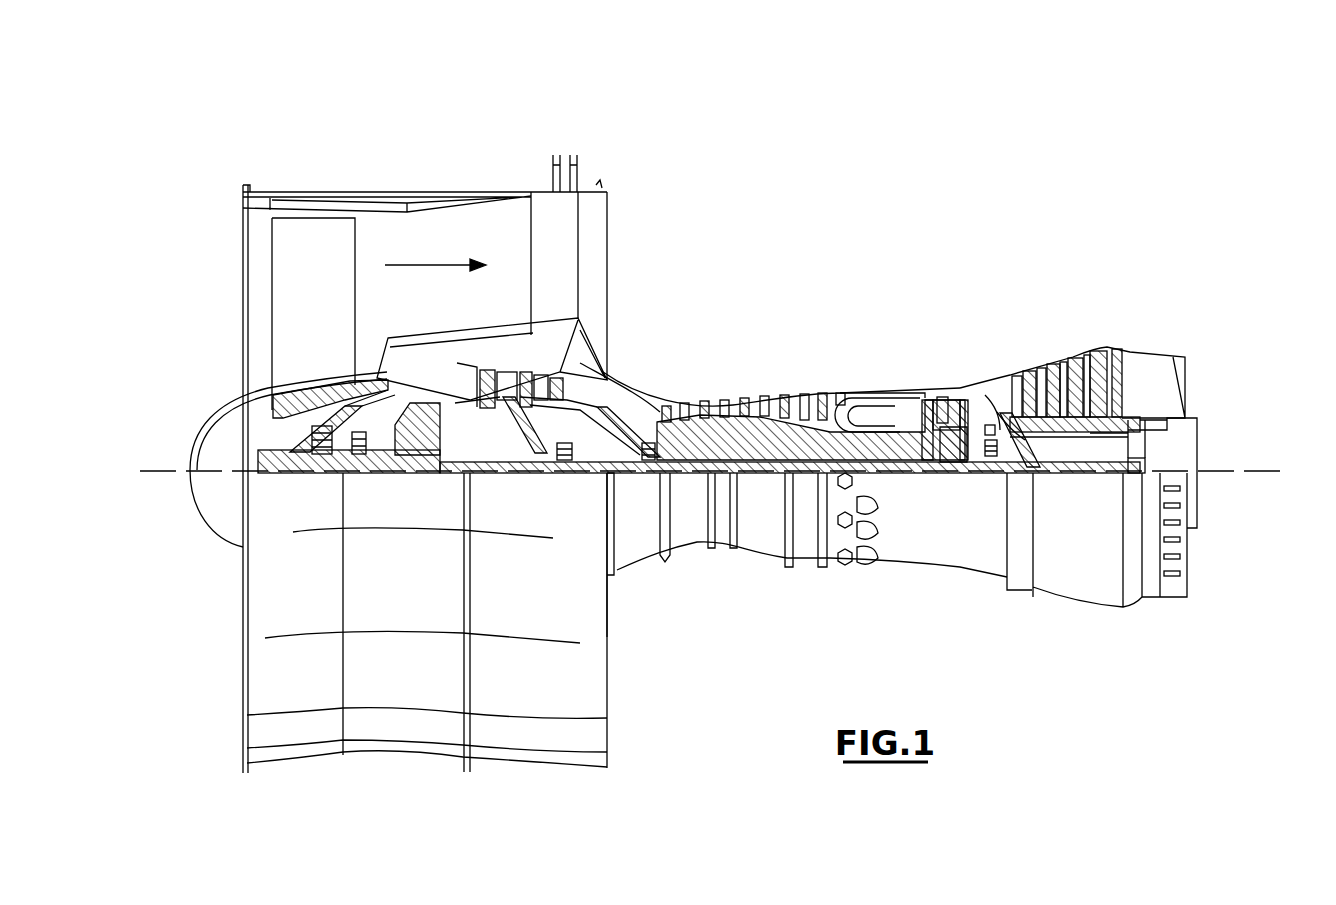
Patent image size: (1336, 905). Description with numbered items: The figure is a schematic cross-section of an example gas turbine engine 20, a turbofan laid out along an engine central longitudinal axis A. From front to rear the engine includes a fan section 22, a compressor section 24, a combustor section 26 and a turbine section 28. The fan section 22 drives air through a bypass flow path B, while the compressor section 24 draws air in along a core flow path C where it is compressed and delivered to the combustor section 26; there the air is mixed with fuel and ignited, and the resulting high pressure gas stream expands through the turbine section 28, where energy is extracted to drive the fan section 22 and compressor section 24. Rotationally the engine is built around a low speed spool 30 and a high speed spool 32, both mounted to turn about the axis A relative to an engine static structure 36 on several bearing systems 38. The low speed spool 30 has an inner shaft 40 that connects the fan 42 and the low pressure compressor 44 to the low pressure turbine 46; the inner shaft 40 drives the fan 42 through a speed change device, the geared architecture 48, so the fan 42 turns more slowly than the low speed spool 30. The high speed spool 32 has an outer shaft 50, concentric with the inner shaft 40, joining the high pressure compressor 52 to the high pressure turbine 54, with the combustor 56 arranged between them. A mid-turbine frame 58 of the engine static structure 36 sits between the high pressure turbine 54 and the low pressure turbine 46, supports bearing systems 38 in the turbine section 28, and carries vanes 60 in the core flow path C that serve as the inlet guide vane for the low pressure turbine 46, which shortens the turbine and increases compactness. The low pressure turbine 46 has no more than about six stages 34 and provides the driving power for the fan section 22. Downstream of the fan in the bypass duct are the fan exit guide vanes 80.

The gas turbine engine 20 is at (890, 236).
The fan section 22 is at (228, 160).
The compressor section 24 is at (465, 305).
The combustor section 26 is at (967, 305).
The turbine section 28 is at (978, 305).
The low speed spool 30 is at (765, 490).
The high speed spool 32 is at (797, 440).
The stages 34 is at (1075, 432).
The engine static structure 36 is at (803, 575).
The bearing systems 38 is at (323, 473).
The inner shaft 40 is at (622, 473).
The fan 42 is at (298, 316).
The low pressure compressor section 44 is at (540, 375).
The low pressure turbine section 46 is at (1075, 350).
The geared architecture 48 is at (431, 457).
The outer shaft 50 is at (897, 458).
The high pressure compressor section 52 is at (738, 447).
The high pressure turbine section 54 is at (941, 390).
The combustor 56 is at (873, 417).
The mid-turbine frame 58 is at (990, 370).
The vanes 60 is at (995, 412).
The fan exit guide vanes 80 is at (560, 243).
The engine central longitudinal axis A is at (1280, 472).
The bypass flow path B is at (420, 262).
The core flow path C is at (418, 369).